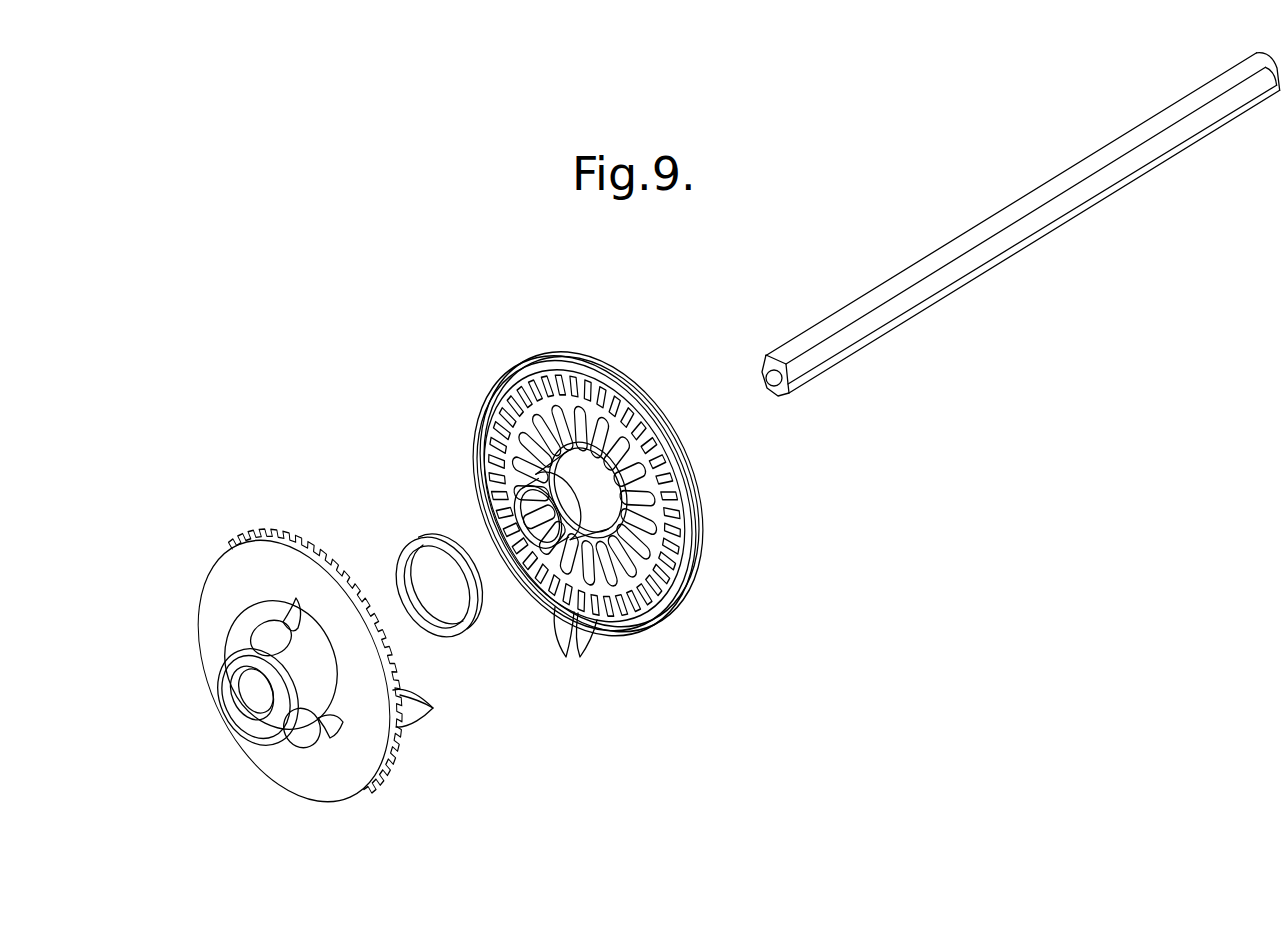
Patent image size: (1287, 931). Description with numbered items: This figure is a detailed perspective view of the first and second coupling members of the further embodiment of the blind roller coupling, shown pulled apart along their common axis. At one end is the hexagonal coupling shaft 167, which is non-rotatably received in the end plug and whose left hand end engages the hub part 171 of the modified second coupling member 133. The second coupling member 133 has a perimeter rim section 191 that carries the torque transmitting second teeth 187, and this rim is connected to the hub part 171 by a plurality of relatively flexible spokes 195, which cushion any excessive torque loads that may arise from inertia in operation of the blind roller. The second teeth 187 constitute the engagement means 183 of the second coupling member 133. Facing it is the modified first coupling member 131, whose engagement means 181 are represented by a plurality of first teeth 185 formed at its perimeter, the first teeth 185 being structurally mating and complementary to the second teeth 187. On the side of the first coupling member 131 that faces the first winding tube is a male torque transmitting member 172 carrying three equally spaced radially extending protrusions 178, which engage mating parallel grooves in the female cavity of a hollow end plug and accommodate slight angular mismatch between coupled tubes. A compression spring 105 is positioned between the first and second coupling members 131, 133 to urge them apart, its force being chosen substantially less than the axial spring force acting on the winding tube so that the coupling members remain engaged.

The compression spring 105 is at (467, 624).
The first coupling member 131 is at (311, 659).
The second coupling member 133 is at (591, 506).
The hexagonal coupling shaft 167 is at (1033, 220).
The hub part 171 is at (528, 516).
The male torque transmitting member 172 is at (293, 690).
The radially extending protrusions 178 is at (262, 635).
The engagement means 181 is at (285, 538).
The engagement means 183 is at (487, 393).
The first teeth 185 is at (437, 708).
The second teeth 187 is at (579, 652).
The perimeter rim section 191 is at (672, 600).
The flexible spokes 195 is at (500, 462).